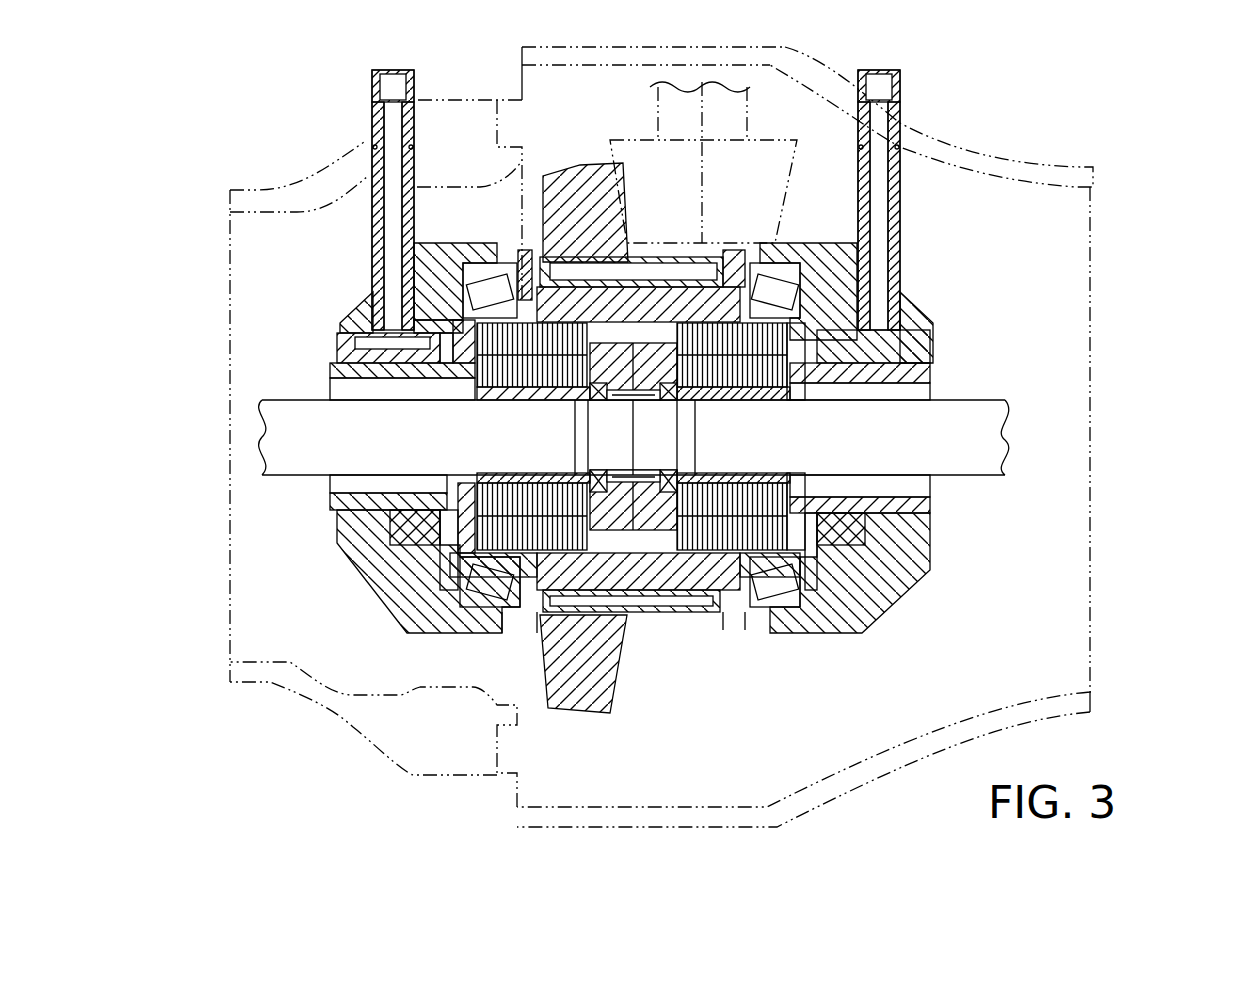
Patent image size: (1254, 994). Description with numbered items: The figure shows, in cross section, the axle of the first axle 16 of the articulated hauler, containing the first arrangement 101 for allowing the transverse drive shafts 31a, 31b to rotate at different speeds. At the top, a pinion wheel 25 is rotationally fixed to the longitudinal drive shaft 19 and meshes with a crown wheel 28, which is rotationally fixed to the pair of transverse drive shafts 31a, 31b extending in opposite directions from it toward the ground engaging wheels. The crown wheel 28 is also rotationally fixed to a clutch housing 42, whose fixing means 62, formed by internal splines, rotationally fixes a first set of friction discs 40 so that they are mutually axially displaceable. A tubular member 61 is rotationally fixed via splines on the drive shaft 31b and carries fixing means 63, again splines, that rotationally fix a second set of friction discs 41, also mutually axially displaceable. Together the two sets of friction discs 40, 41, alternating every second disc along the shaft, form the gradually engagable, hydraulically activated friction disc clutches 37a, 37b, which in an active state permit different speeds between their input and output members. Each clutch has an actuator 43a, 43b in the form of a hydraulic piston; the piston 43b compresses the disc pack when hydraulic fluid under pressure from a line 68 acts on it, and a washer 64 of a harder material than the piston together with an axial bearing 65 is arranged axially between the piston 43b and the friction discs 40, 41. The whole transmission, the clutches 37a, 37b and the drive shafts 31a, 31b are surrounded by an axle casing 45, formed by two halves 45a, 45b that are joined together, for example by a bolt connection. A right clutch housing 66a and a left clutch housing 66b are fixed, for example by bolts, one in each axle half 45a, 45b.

The first axle 16 is at (315, 745).
The longitudinal drive shaft 19 is at (733, 110).
The pinion wheel 25 is at (840, 200).
The crown wheel 28 is at (583, 175).
The transverse drive shaft 31a is at (975, 460).
The transverse drive shaft 31b is at (300, 465).
The friction disc clutch 37a is at (723, 617).
The friction disc clutch 37b is at (520, 613).
The first set of friction discs 40 is at (540, 280).
The second set of friction discs 41 is at (548, 305).
The clutch housing 42 is at (527, 285).
The actuator 43a is at (933, 378).
The actuator 43b is at (335, 365).
The axle casing 45 is at (1100, 133).
The axle half 45a is at (530, 58).
The axle half 45b is at (255, 197).
The tubular member 61 is at (475, 420).
The fixing means 62 is at (400, 290).
The fixing means 63 is at (500, 408).
The washer 64 is at (390, 378).
The axial bearing 65 is at (440, 398).
The right clutch housing 66a is at (880, 555).
The left clutch housing 66b is at (370, 552).
The line 68 is at (397, 120).
The first arrangement 101 is at (330, 615).